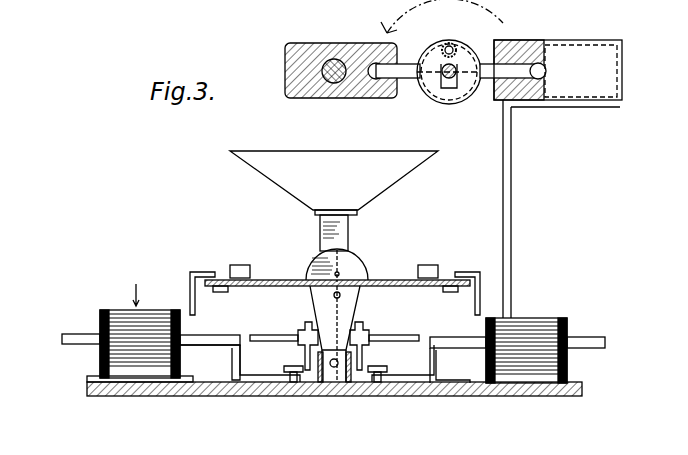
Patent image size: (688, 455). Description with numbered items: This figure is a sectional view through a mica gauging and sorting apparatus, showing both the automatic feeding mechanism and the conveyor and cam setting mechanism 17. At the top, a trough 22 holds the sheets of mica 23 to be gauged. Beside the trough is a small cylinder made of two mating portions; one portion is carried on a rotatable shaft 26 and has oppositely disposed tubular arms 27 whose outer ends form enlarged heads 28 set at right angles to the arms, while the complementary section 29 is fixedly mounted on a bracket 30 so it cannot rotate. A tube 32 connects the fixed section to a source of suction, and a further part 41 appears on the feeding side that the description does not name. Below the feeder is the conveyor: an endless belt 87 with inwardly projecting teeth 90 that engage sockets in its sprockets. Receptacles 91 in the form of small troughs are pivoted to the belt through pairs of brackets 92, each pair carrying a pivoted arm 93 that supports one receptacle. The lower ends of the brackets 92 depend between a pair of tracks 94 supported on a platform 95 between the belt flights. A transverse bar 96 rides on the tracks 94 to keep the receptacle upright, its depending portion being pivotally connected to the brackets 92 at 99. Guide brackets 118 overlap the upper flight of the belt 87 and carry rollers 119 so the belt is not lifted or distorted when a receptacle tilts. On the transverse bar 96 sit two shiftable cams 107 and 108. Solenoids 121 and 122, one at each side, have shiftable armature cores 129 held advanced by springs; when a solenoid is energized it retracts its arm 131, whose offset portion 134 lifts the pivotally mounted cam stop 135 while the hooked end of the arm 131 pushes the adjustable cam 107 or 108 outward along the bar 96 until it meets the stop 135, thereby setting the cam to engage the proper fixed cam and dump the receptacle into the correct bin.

The automatic cam setting mechanism 17 is at (136, 288).
The trough 22 is at (622, 62).
The sheets of mica 23 is at (367, 52).
The rotatable shaft 26 is at (444, 64).
The tubular arms 27 is at (394, 83).
The enlarged heads 28 is at (546, 72).
The cylinder section 29 is at (466, 56).
The bracket 30 is at (452, 90).
The tube 32 is at (450, 43).
The journal 41 is at (334, 59).
The endless belt 87 is at (287, 280).
The teeth 90 is at (221, 292).
The receptacles 91 is at (356, 163).
The brackets 92 is at (362, 263).
The arm 93 is at (350, 232).
The tracks 94 is at (321, 396).
The platform 95 is at (235, 396).
The transverse bar 96 is at (290, 336).
The pivotal connection 99 is at (334, 396).
The shiftable cam 107 is at (364, 354).
The shiftable cam 108 is at (304, 354).
The guide brackets 118 is at (205, 272).
The rollers 119 is at (242, 265).
The solenoid 121 is at (552, 318).
The solenoid 122 is at (117, 316).
The armature cores 129 is at (208, 340).
The arm 131 is at (250, 396).
The offset portion 134 is at (293, 396).
The cam stop 135 is at (286, 370).